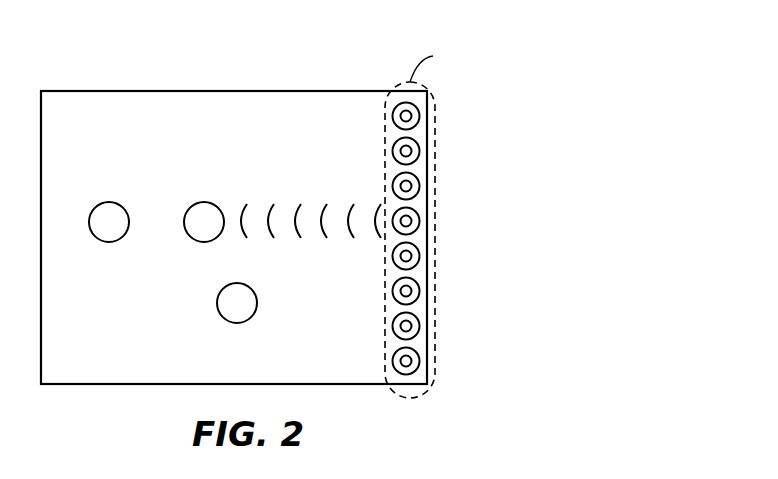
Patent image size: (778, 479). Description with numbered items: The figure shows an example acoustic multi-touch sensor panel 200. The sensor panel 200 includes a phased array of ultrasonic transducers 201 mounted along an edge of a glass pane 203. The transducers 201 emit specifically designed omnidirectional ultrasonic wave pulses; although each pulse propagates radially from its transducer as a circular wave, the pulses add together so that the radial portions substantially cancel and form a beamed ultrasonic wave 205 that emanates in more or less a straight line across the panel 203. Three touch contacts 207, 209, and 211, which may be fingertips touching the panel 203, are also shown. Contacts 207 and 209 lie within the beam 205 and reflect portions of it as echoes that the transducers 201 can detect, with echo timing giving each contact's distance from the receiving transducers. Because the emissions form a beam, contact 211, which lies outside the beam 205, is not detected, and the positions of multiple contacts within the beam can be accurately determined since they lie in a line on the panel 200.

The acoustic multi-touch sensor panel 200 is at (176, 62).
The phased array of ultrasonic transducers 201 is at (420, 116).
The glass pane 203 is at (140, 90).
The beamed ultrasonic wave 205 is at (285, 210).
The touch contact 207 is at (204, 202).
The touch contact 209 is at (110, 242).
The touch contact 211 is at (250, 285).